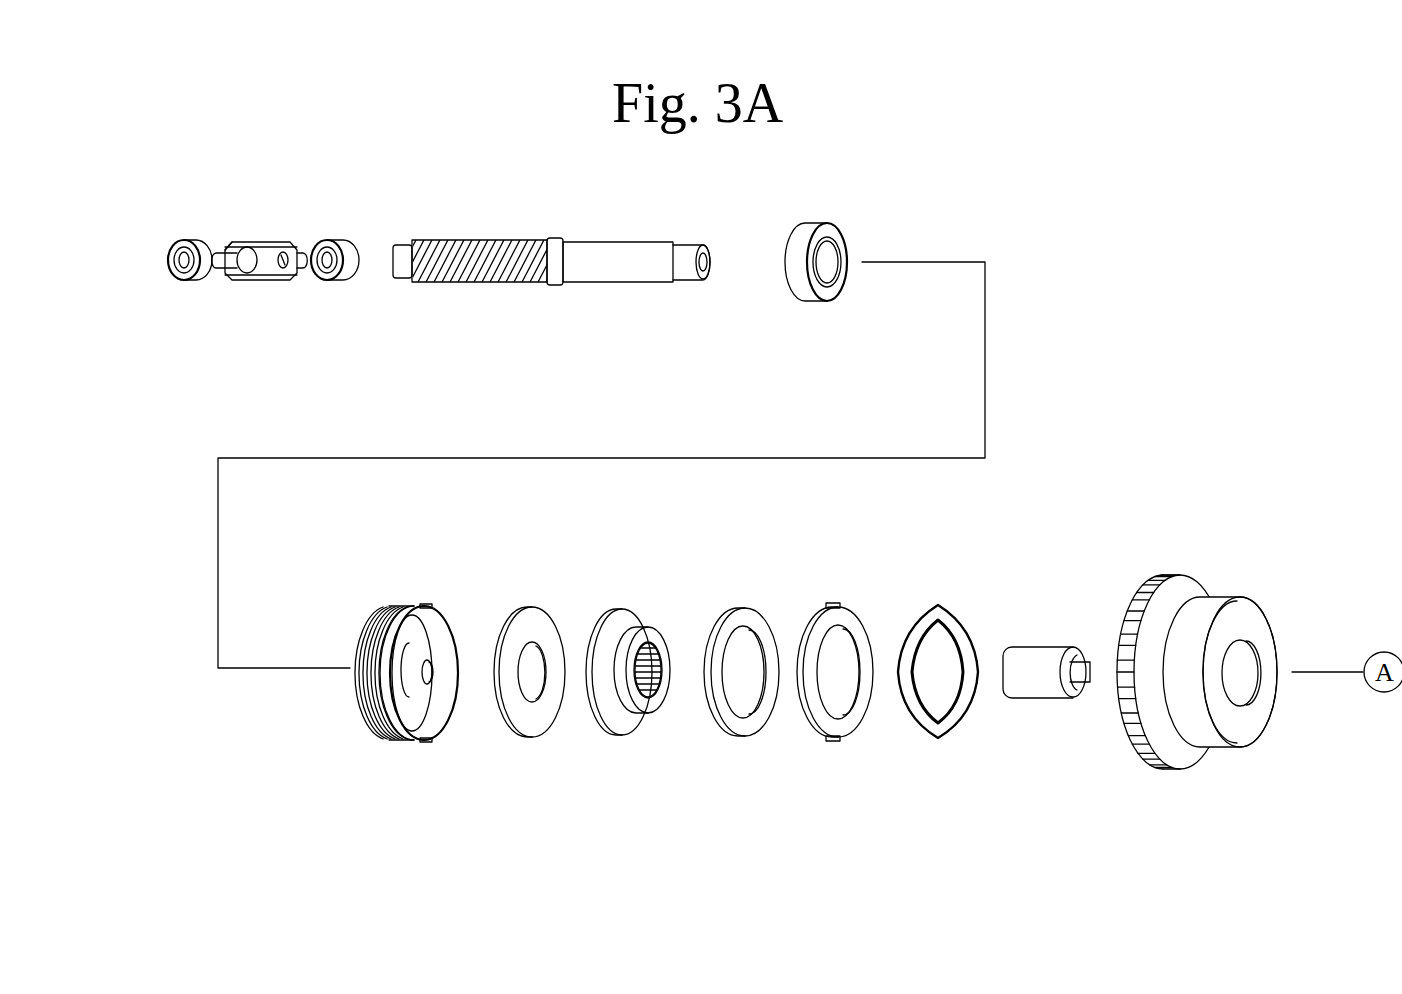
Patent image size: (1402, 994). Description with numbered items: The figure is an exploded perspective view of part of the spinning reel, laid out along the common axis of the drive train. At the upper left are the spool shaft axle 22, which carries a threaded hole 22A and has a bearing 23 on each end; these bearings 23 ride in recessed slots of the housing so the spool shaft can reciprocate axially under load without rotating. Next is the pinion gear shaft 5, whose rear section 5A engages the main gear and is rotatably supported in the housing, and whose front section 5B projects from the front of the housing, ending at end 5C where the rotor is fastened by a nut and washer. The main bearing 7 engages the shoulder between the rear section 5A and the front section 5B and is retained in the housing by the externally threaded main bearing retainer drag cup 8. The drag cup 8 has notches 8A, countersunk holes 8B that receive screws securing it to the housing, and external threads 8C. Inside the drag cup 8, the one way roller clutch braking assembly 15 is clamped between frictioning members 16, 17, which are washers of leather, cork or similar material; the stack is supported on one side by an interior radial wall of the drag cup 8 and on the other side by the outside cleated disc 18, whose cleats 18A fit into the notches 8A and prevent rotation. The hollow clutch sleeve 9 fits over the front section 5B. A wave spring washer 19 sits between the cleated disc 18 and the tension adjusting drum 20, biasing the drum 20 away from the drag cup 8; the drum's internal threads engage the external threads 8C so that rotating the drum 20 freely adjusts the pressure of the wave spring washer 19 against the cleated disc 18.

The pinion gear shaft 5 is at (556, 265).
The rear section of pinion gear shaft 5A is at (479, 240).
The front section of pinion gear shaft 5B is at (624, 250).
The end of pinion gear shaft 5C is at (684, 250).
The main bearing 7 is at (810, 303).
The main bearing retainer drag cup 8 is at (386, 674).
The notches 8A is at (427, 604).
The countersunk holes 8B is at (430, 666).
The external threads 8C is at (362, 708).
The clutch sleeve 9 is at (1044, 700).
The one way roller clutch braking assembly 15 is at (628, 736).
The frictioning member 16 is at (530, 738).
The frictioning member 17 is at (744, 737).
The outside cleated disc 18 is at (816, 686).
The cleats 18A is at (833, 603).
The wave spring washer 19 is at (937, 739).
The tension adjusting drum 20 is at (1176, 770).
The spool shaft axle 22 is at (250, 283).
The threaded hole 22A is at (284, 250).
The bearings 23 is at (190, 282).